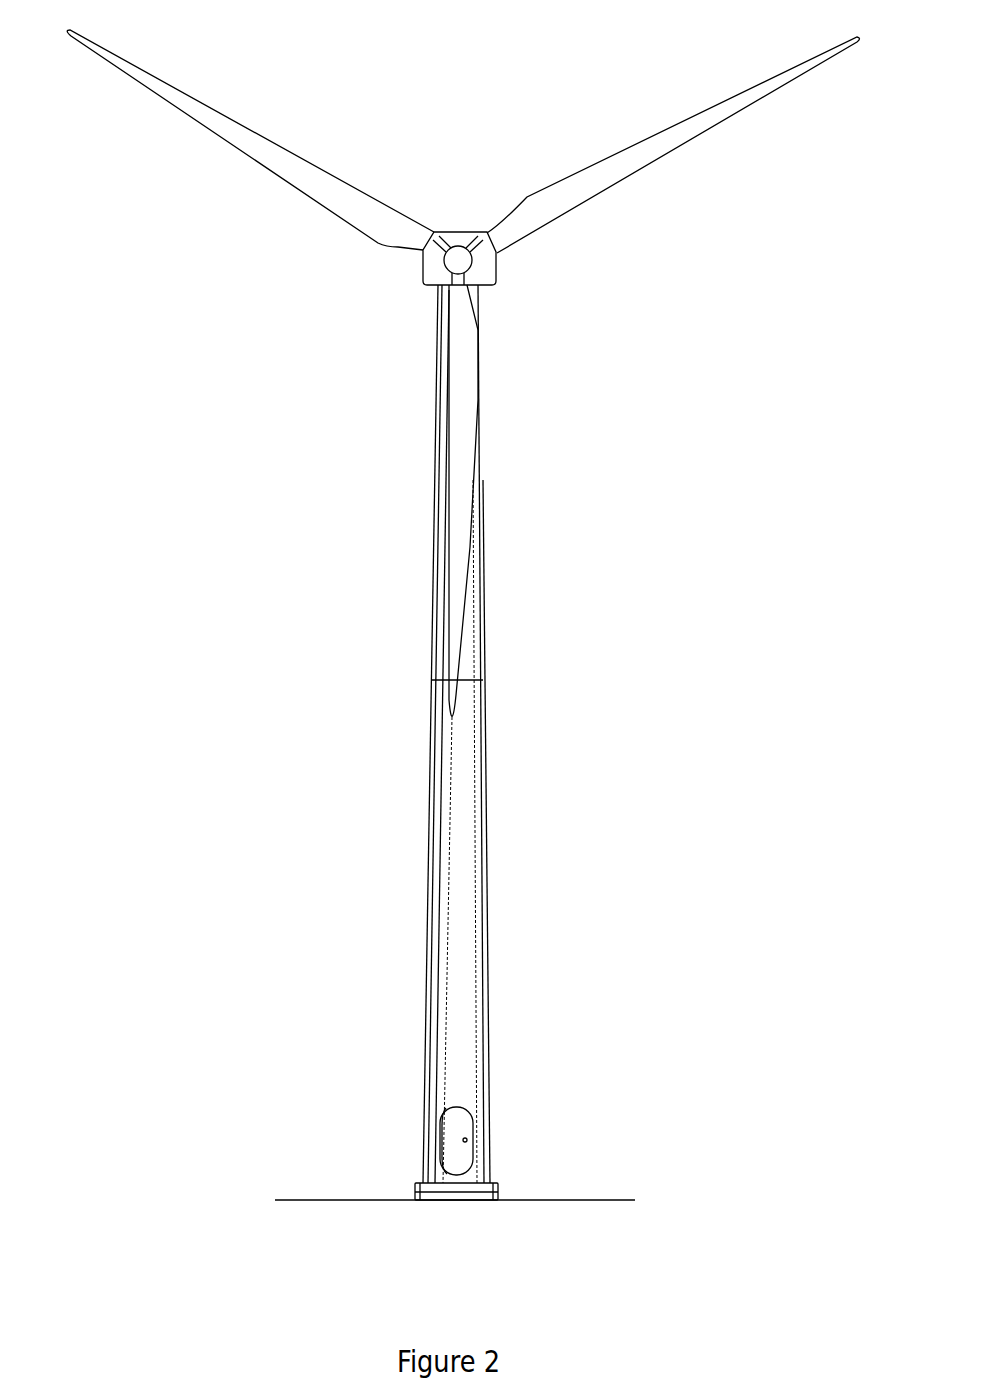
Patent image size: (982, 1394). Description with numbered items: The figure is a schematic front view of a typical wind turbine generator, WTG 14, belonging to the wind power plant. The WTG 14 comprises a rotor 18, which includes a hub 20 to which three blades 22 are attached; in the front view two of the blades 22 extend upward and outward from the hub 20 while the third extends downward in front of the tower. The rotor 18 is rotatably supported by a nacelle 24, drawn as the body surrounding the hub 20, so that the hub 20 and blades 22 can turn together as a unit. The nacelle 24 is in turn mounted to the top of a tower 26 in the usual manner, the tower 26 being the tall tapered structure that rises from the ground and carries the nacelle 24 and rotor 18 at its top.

The WTG 14 is at (463, 602).
The rotor 18 is at (463, 360).
The hub 20 is at (460, 243).
The blades 22 is at (330, 172).
The nacelle 24 is at (495, 283).
The tower 26 is at (485, 725).